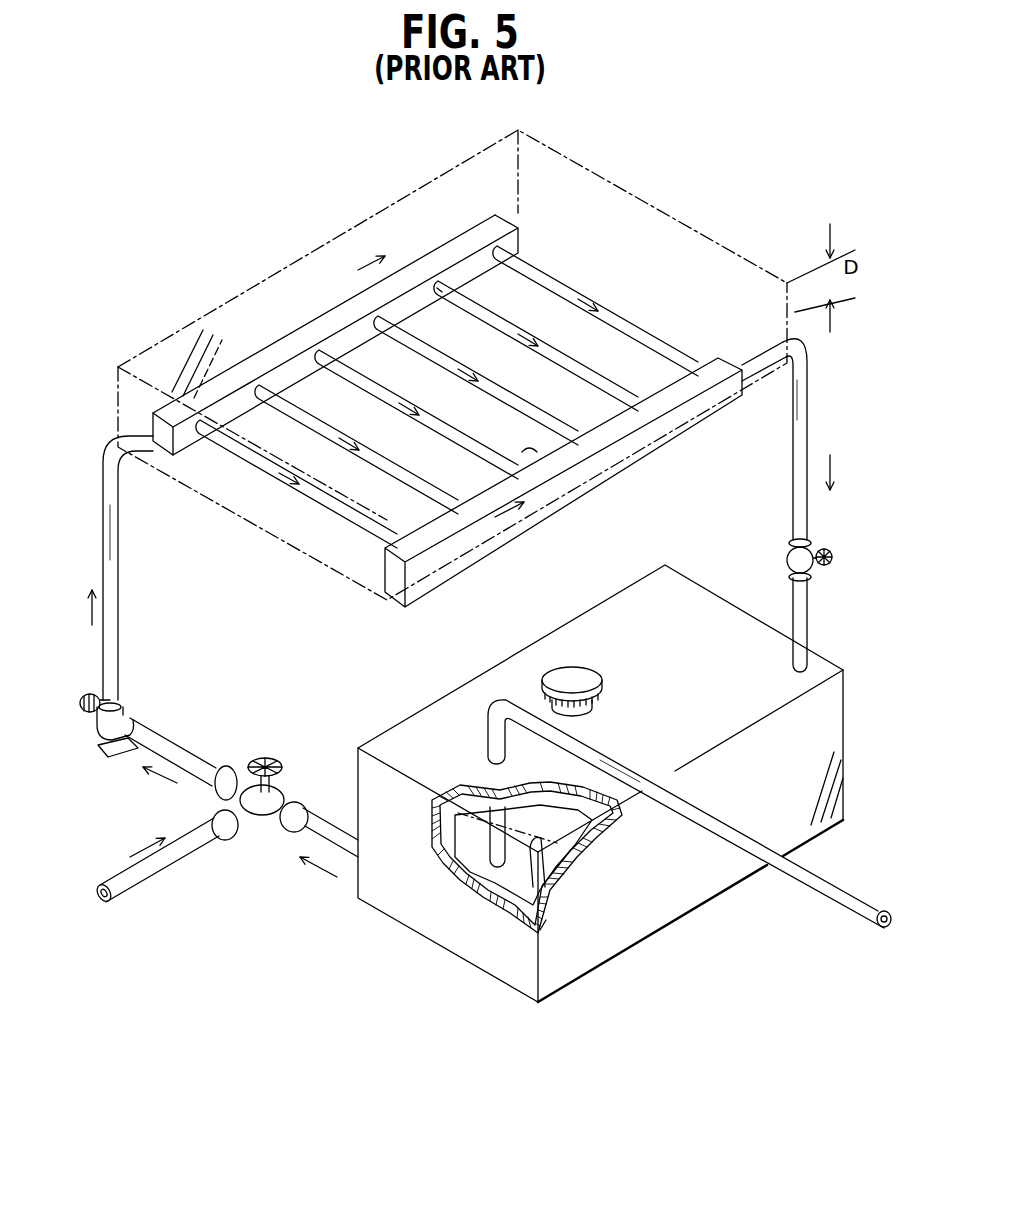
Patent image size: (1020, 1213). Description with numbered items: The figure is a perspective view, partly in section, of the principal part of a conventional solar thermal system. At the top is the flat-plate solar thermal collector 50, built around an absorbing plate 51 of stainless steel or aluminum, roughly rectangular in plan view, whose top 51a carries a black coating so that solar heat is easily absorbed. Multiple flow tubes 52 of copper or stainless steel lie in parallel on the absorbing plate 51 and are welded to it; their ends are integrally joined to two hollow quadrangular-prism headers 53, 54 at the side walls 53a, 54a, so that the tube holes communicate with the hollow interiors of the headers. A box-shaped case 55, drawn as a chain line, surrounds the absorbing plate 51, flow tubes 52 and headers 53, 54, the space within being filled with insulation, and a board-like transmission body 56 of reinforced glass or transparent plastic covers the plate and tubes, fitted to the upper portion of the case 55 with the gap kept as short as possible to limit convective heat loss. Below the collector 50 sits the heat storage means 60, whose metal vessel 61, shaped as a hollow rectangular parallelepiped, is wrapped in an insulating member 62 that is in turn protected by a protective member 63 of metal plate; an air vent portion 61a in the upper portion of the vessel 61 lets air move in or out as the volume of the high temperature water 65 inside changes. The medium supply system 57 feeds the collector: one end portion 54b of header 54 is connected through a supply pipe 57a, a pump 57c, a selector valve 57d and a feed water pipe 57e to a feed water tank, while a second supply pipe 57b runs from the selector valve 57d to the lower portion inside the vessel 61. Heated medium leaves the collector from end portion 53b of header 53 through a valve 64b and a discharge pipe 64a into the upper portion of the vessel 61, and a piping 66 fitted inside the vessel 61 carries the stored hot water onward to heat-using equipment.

The flat-plate solar thermal collector 50 is at (668, 182).
The absorbing plate 51 is at (447, 335).
The top of the absorbing plate 51a is at (437, 327).
The flow tubes 52 is at (660, 347).
The header 53 is at (585, 474).
The side wall of the header 53a is at (527, 450).
The end portion of the header 53b is at (760, 388).
The header 54 is at (281, 283).
The side wall of the header 54a is at (292, 370).
The end portion of the header 54b is at (148, 427).
The case 55 is at (240, 287).
The transmission body 56 is at (140, 328).
The medium supply system 57 is at (195, 717).
The supply pipe 57a is at (217, 757).
The supply pipe 57b is at (320, 810).
The pump 57c is at (92, 733).
The selector valve 57d is at (268, 822).
The feed water pipe 57e is at (163, 868).
The heat storage means 60 is at (724, 583).
The vessel 61 is at (558, 920).
The air vent portion 61a is at (570, 675).
The insulating member 62 is at (615, 805).
The protective member 63 is at (565, 893).
The discharge pipe 64a is at (810, 422).
The valve 64b is at (816, 576).
The high temperature water 65 is at (545, 927).
The piping 66 is at (835, 882).